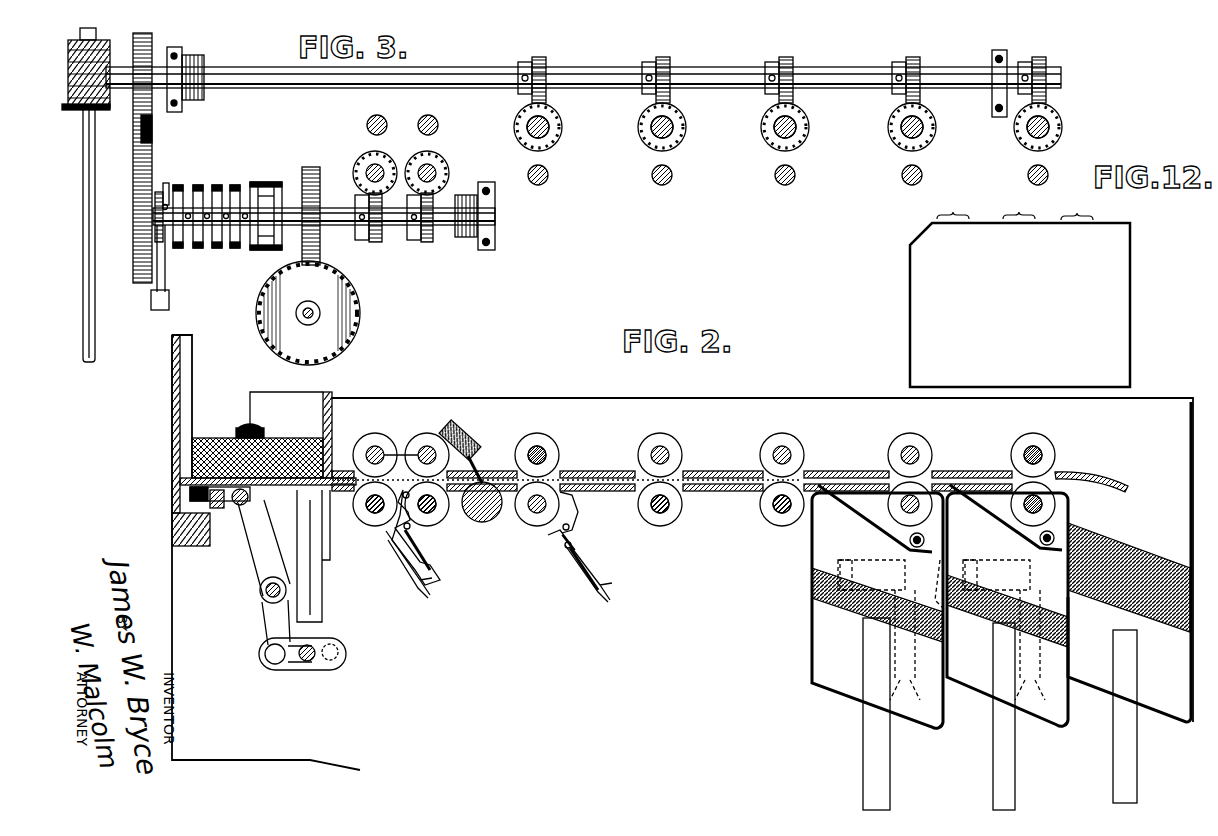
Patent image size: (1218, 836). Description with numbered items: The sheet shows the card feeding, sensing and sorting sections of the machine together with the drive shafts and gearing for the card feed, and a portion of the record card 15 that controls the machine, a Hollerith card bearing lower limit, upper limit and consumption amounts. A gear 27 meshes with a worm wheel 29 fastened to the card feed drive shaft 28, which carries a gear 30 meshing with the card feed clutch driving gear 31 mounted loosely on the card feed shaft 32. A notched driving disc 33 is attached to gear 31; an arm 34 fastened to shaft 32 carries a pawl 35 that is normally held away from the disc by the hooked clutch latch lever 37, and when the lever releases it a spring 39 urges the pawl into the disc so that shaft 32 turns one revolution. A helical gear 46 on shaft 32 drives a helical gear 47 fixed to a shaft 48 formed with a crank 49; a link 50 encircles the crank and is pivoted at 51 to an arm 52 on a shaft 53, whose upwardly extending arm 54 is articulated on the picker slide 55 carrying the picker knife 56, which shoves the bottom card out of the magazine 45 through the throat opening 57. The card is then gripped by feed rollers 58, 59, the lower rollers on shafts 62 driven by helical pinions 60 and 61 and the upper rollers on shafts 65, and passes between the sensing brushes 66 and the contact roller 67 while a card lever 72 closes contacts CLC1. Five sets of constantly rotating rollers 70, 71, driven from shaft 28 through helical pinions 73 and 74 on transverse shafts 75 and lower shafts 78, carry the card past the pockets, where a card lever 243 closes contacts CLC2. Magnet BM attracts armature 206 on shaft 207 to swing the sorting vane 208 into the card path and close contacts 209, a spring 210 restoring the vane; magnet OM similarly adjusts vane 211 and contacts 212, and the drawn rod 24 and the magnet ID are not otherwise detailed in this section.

In FIG. 3, the card feed drive shaft 28 is at (432, 77).
In FIG. 3, the gear 27 is at (75, 107).
In FIG. 3, the worm wheel 29 is at (82, 118).
In FIG. 3, the vertical drive rod 24 is at (88, 207).
In FIG. 3, the gear 30 is at (148, 46).
In FIG. 3, the card feed clutch driving gear 31 is at (153, 153).
In FIG. 3, the card feed shaft 32 is at (346, 226).
In FIG. 3, the notched driving disc 33 is at (154, 174).
In FIG. 3, the spring 39 is at (163, 186).
In FIG. 3, the feed cams FC is at (236, 186).
In FIG. 3, the magnet ID is at (267, 186).
In FIG. 3, the helical gear 46 is at (304, 168).
In FIG. 3, the helical pinions 60 is at (424, 241).
In FIG. 3, the helical pinions 61 is at (448, 184).
In FIG. 3, the shafts 62 is at (425, 165).
In FIG. 2, the shafts 62 is at (430, 513).
In FIG. 3, the shafts 65 is at (426, 124).
In FIG. 2, the shafts 65 is at (372, 450).
In FIG. 3, the helical gear 47 is at (335, 291).
In FIG. 3, the shaft 48 is at (318, 314).
In FIG. 2, the shaft 48 is at (308, 661).
In FIG. 3, the arm 34 is at (168, 261).
In FIG. 3, the pawl 35 is at (160, 268).
In FIG. 3, the clutch latch lever 37 is at (152, 304).
In FIG. 3, the helical pinions 73 is at (1040, 66).
In FIG. 3, the pinions 74 is at (1052, 118).
In FIG. 3, the transverse horizontal shafts 75 is at (1047, 127).
In FIG. 2, the transverse horizontal shafts 75 is at (1044, 455).
In FIG. 3, the shaft 78 is at (1043, 170).
In FIG. 2, the shaft 78 is at (1038, 500).
In FIG. 12, the record card 15 is at (917, 307).
In FIG. 2, the record card 15 is at (1160, 568).
In FIG. 2, the magazine 45 is at (282, 402).
In FIG. 2, the picker knife 56 is at (186, 493).
In FIG. 2, the picker slide 55 is at (216, 508).
In FIG. 2, the arm 54 is at (250, 546).
In FIG. 2, the shaft 53 is at (260, 590).
In FIG. 2, the arm 52 is at (266, 633).
In FIG. 2, the crank 49 is at (334, 646).
In FIG. 2, the pivot 51 is at (272, 659).
In FIG. 2, the link 50 is at (294, 664).
In FIG. 2, the sorting vane 208 is at (880, 476).
In FIG. 2, the throat opening 57 is at (337, 470).
In FIG. 2, the upper feed rollers 58 is at (421, 440).
In FIG. 2, the lower feed rollers 59 is at (440, 504).
In FIG. 2, the sensing brushes 66 is at (470, 460).
In FIG. 2, the contact roller 67 is at (483, 510).
In FIG. 2, the card lever 72 is at (408, 527).
In FIG. 2, the card lever contacts CLC1 is at (390, 556).
In FIG. 2, the lower feed rollers 71 is at (1052, 508).
In FIG. 2, the upper card feeding rollers 70 is at (1046, 444).
In FIG. 2, the card lever contacts CLC2 is at (566, 540).
In FIG. 2, the card lever 243 is at (580, 508).
In FIG. 2, the shaft 207 is at (905, 545).
In FIG. 2, the magnet BM is at (865, 560).
In FIG. 2, the contacts 209 is at (934, 604).
In FIG. 2, the armature 206 is at (942, 570).
In FIG. 2, the spring 210 is at (937, 570).
In FIG. 2, the magnet OM is at (1002, 558).
In FIG. 2, the vane 211 is at (957, 482).
In FIG. 2, the contacts 212 is at (1070, 612).